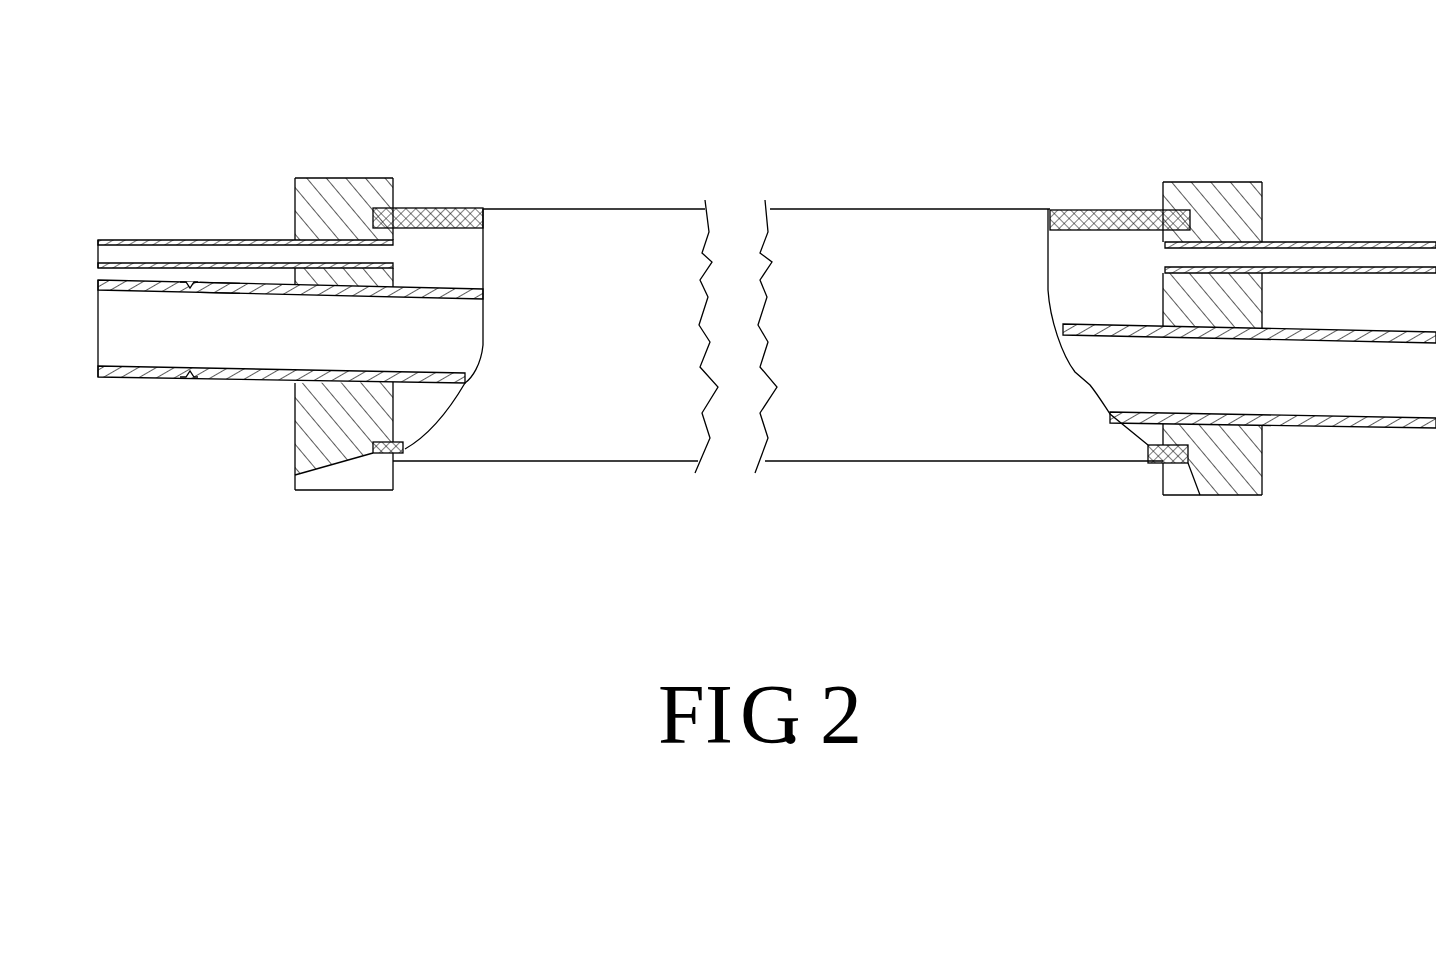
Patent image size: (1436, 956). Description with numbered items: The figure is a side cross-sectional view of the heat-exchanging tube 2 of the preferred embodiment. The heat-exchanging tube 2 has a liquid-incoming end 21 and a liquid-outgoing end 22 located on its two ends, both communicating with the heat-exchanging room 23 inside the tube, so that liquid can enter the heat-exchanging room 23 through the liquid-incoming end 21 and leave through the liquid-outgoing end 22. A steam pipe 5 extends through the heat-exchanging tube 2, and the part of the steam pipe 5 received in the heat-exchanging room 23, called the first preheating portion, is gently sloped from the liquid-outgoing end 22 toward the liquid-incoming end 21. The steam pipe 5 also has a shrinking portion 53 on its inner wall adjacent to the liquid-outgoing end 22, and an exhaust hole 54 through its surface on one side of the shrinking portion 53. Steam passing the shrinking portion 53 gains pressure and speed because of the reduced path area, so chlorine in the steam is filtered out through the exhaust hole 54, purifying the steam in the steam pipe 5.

The heat-exchanging tube 2 is at (880, 170).
The liquid-incoming end 21 is at (1220, 233).
The liquid-outgoing end 22 is at (330, 240).
The heat-exchanging room 23 is at (450, 228).
The steam pipe 5 is at (222, 402).
The shrinking portion 53 is at (178, 306).
The exhaust hole 54 is at (219, 284).